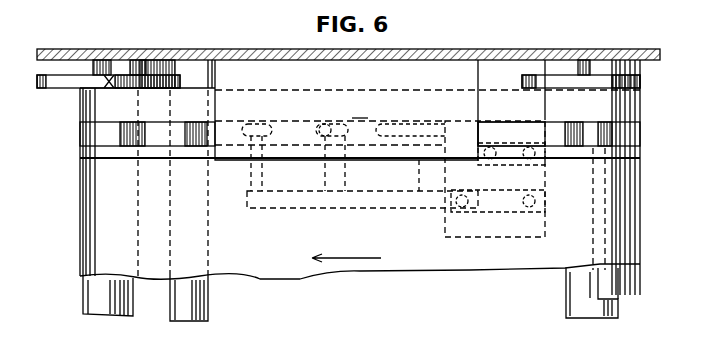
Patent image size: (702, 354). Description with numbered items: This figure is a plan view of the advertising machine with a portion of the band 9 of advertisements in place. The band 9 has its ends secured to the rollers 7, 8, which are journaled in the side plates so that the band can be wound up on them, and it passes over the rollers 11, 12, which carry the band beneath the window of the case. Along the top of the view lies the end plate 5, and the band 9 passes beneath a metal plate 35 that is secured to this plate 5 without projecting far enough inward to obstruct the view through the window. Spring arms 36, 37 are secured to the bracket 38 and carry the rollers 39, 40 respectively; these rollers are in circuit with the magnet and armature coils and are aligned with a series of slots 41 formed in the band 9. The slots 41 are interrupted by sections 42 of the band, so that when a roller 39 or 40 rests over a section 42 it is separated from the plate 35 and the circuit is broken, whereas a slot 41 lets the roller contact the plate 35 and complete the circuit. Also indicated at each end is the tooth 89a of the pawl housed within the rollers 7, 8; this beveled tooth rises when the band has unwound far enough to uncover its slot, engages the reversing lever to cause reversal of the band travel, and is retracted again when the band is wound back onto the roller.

The end plate 5 is at (621, 49).
The tooth 89a is at (587, 88).
The band 9 is at (360, 177).
The metal plate 35 is at (453, 78).
The slots 41 is at (107, 141).
The roller 39 is at (271, 152).
The roller 40 is at (349, 150).
The sections 42 is at (362, 133).
The spring arm 37 is at (421, 190).
The bracket 38 is at (508, 238).
The spring arm 36 is at (385, 200).
The roller 8 is at (103, 310).
The roller 11 is at (186, 314).
The roller 7 is at (599, 320).
The roller 12 is at (628, 330).